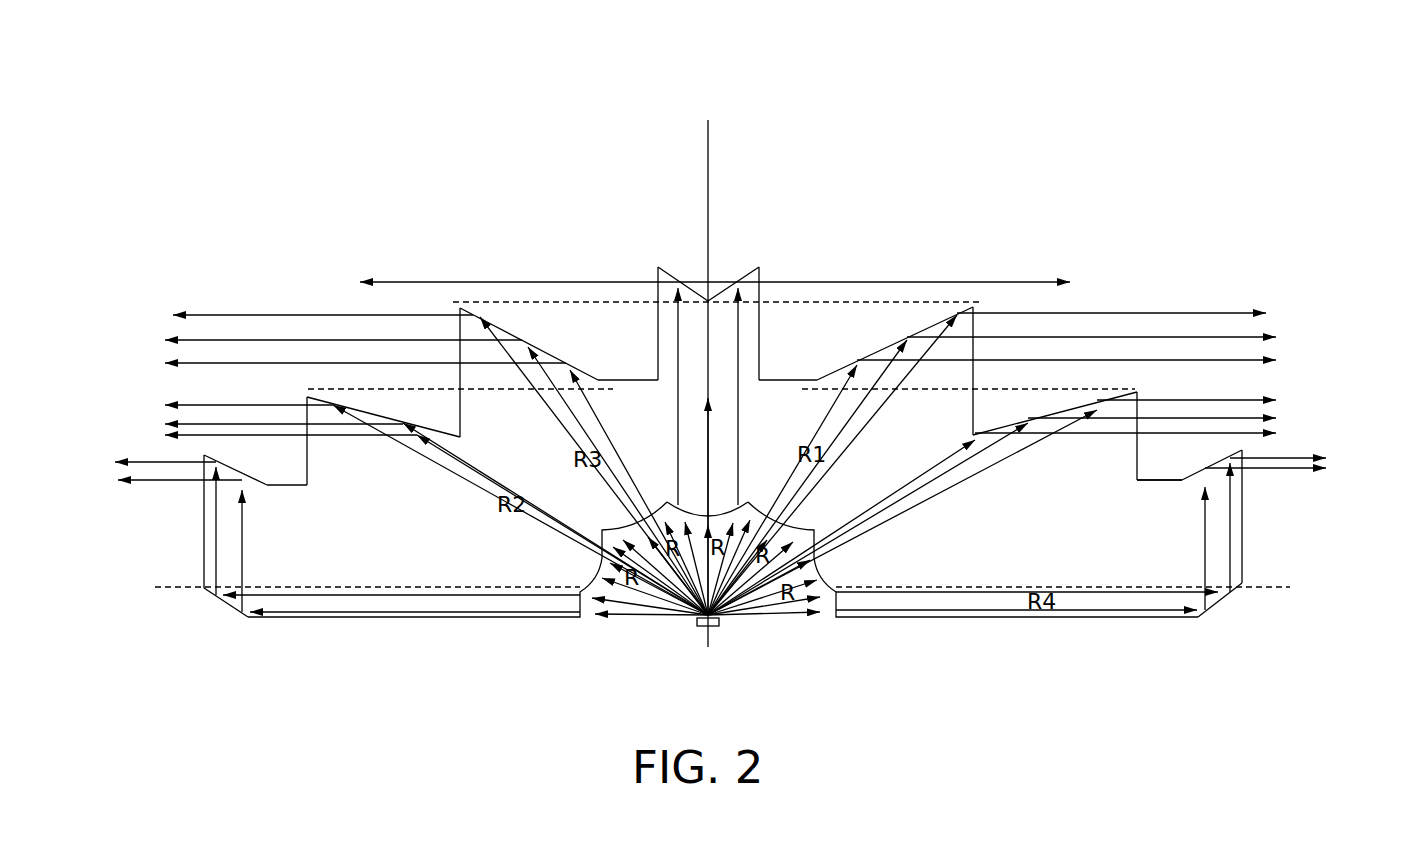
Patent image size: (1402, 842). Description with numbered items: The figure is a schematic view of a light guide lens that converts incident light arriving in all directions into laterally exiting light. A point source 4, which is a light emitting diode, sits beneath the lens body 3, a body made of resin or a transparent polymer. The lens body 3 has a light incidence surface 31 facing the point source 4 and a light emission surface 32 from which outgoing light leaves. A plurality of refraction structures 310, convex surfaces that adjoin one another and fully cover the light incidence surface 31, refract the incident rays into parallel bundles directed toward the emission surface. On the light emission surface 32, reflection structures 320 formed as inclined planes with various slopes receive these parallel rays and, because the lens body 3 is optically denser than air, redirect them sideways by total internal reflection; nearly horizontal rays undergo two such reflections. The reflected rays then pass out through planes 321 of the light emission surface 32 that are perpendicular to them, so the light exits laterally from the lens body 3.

The lens body 3 is at (870, 173).
The light incidence surface 31 is at (725, 500).
The light emission surface 32 is at (760, 272).
The reflection structure 320 is at (390, 420).
The plane 321 is at (308, 445).
The refraction structure 310 is at (638, 620).
The point source 4 is at (712, 628).